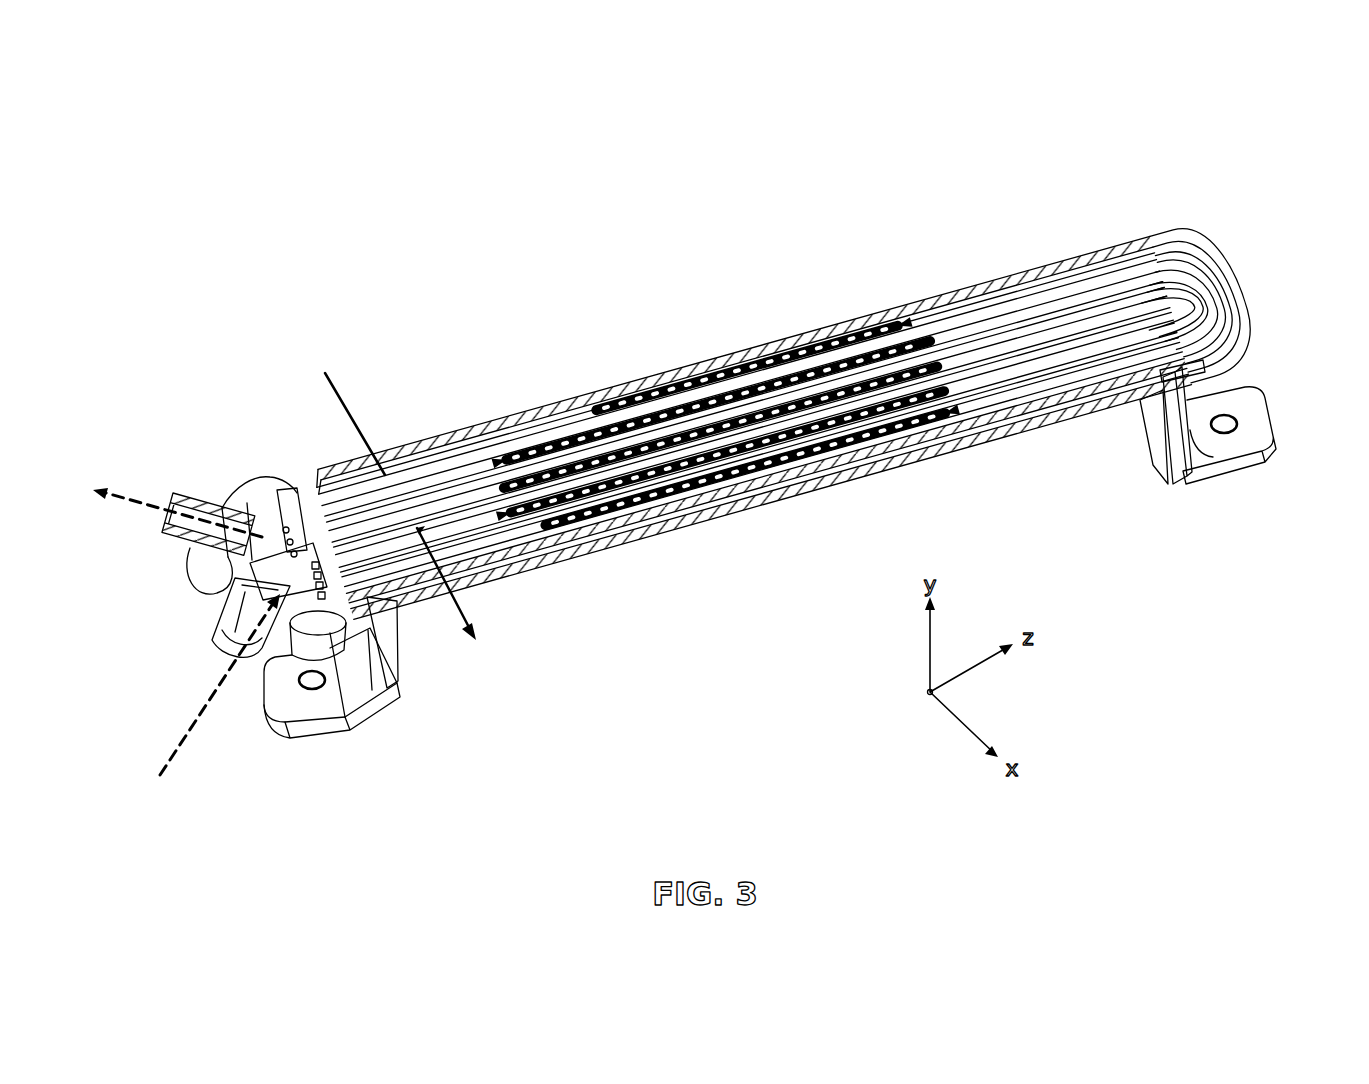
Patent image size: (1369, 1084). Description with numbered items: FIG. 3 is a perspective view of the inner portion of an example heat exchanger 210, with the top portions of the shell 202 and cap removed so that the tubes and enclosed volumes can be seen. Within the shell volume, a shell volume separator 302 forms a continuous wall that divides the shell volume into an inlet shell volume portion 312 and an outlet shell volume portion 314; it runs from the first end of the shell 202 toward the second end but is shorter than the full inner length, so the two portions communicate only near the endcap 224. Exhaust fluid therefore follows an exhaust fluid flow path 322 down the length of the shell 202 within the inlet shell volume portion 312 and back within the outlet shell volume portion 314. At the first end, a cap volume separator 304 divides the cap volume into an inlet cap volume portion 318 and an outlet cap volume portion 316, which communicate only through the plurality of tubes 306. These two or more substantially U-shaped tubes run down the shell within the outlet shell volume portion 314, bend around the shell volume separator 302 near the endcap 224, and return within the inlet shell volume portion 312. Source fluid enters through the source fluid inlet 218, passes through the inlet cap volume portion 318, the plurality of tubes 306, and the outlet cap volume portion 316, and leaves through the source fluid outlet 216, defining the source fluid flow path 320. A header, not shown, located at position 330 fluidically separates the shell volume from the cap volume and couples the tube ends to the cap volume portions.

The shell 202 is at (690, 372).
The heat exchanger 210 is at (1279, 108).
The source fluid outlet 216 is at (190, 525).
The source fluid inlet 218 is at (230, 632).
The endcap 224 is at (1225, 268).
The shell volume separator 302 is at (1150, 315).
The cap volume separator 304 is at (303, 487).
The plurality of tubes 306 is at (1112, 360).
The inlet shell volume portion 312 is at (1072, 296).
The outlet shell volume portion 314 is at (1045, 390).
The outlet cap volume portion 316 is at (265, 510).
The inlet cap volume portion 318 is at (340, 725).
The source fluid flow path 320 is at (125, 500).
The exhaust fluid flow path 322 is at (345, 400).
The position of header 330 is at (283, 503).